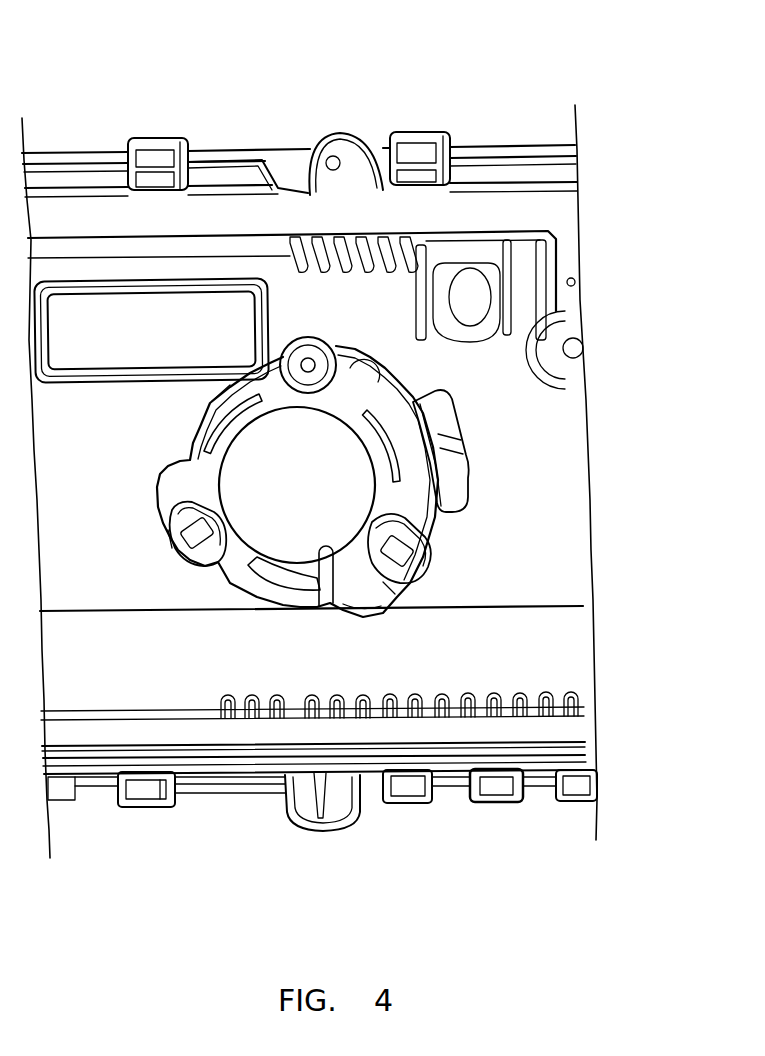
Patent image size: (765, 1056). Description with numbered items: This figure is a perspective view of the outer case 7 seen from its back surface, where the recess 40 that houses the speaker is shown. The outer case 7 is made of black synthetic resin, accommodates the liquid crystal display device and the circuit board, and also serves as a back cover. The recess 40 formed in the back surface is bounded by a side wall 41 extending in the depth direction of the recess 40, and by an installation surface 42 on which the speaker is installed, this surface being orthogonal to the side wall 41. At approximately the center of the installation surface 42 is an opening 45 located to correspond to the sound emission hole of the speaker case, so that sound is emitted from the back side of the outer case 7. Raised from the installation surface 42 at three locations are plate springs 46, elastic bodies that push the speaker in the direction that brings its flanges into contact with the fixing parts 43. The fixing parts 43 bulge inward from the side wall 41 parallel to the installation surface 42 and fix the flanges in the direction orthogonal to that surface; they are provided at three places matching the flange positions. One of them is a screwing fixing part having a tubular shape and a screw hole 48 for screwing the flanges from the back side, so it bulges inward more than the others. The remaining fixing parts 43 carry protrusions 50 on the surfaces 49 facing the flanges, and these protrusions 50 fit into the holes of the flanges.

The outer case 7 is at (492, 146).
The recess 40 is at (238, 590).
The side wall 41 is at (398, 428).
The installation surface 42 is at (362, 582).
The fixing parts 43 is at (288, 340).
The opening 45 is at (322, 609).
The plate springs 46 is at (211, 422).
The screw hole 48 is at (308, 357).
The surfaces 49 is at (200, 562).
The protrusions 50 is at (165, 531).